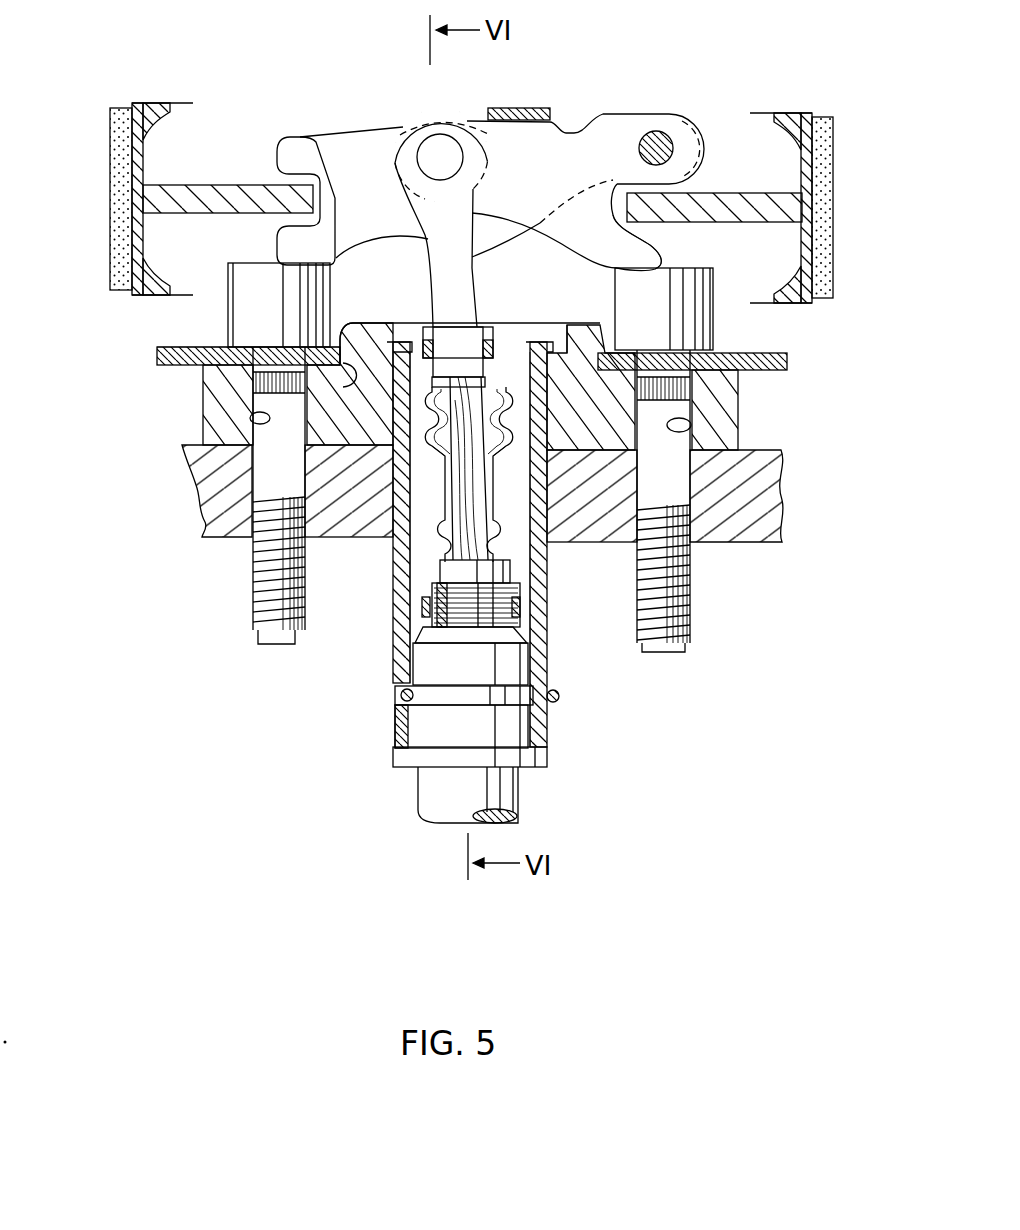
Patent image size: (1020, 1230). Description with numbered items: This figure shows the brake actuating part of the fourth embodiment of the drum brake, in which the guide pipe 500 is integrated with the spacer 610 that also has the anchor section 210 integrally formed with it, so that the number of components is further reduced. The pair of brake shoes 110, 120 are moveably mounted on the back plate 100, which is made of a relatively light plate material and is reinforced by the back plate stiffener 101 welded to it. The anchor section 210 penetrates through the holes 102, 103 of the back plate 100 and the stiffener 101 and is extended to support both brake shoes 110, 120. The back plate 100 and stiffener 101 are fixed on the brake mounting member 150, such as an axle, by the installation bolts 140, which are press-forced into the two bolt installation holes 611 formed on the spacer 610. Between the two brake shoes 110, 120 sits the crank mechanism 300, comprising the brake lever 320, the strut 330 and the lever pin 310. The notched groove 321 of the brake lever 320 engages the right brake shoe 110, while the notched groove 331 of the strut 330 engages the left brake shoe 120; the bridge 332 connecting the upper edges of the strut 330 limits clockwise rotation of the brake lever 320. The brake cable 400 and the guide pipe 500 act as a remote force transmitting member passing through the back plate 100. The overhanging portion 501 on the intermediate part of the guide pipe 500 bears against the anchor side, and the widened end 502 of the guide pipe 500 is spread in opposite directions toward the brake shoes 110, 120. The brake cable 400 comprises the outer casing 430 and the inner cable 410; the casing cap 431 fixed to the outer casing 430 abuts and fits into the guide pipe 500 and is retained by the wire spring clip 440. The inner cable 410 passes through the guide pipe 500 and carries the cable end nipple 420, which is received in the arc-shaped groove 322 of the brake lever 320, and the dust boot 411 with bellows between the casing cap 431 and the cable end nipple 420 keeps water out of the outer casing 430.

The back plate 100 is at (157, 347).
The back plate stiffener 101 is at (157, 356).
The hole of the back plate 102 is at (346, 327).
The hole of the stiffener 103 is at (257, 390).
The brake shoe 110 is at (800, 108).
The brake shoe 120 is at (142, 102).
The installation bolt 140 is at (252, 604).
The brake mounting member 150 is at (772, 543).
The anchor section 210 is at (597, 327).
The crank mechanism 300 is at (527, 108).
The lever pin 310 is at (657, 140).
The brake lever 320 is at (587, 213).
The notched groove 321 is at (713, 193).
The arc-shaped groove 322 is at (403, 126).
The strut 330 is at (296, 152).
The notched groove 331 is at (277, 186).
The bridge 332 is at (550, 108).
The brake cable 400 is at (525, 799).
The inner cable 410 is at (415, 595).
The dust boot 411 is at (412, 555).
The cable end nipple 420 is at (440, 110).
The outer casing 430 is at (440, 800).
The casing cap 431 is at (425, 727).
The wire spring clip 440 is at (560, 700).
The guide pipe 500 is at (553, 655).
The overhanging portion 501 is at (385, 470).
The widened end 502 is at (425, 327).
The spacer 610 is at (742, 398).
The bolt installation hole 611 is at (268, 418).